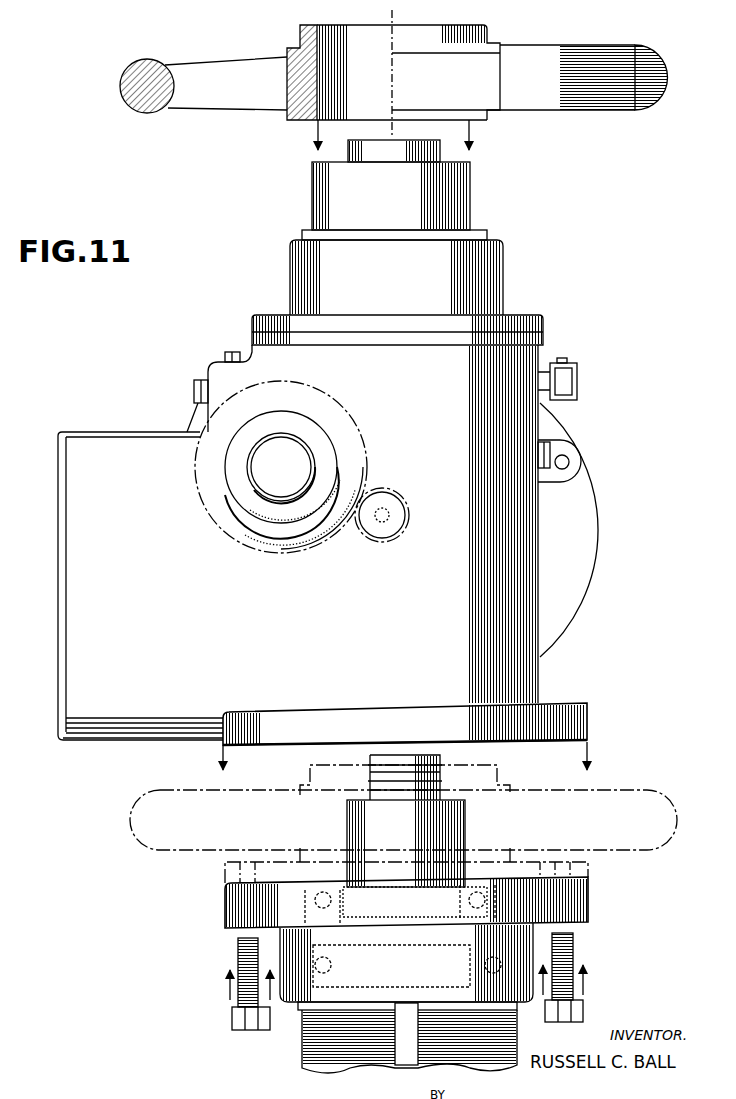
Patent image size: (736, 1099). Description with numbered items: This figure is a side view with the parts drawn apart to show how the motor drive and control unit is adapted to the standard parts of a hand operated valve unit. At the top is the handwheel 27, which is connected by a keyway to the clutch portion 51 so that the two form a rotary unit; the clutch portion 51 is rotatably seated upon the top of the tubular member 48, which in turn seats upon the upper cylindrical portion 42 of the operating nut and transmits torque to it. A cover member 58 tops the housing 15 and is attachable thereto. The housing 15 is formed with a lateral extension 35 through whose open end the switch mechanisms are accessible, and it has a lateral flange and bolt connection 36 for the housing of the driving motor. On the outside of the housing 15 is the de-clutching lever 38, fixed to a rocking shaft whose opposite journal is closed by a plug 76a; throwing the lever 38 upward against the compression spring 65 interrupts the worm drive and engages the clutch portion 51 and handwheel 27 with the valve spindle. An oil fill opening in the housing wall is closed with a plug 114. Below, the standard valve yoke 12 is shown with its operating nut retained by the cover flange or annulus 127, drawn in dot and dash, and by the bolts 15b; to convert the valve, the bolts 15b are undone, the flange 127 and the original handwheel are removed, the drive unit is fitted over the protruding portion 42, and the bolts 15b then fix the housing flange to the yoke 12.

The handwheel 27 is at (543, 56).
The tubular member 48 is at (435, 153).
The clutch portion 51 is at (465, 188).
The cover member 58 is at (490, 260).
The casing or housing 15 is at (527, 600).
The compression spring 65 is at (270, 480).
The lateral extension 35 is at (93, 442).
The plug 76a is at (193, 392).
The plug 114 is at (227, 353).
The de-clutching lever 38 is at (573, 367).
The lateral flange and bolt connection 36 is at (568, 453).
The upper cylindrical portion 42 is at (393, 828).
The retaining top or cover flange or annulus 127 is at (228, 875).
The valve yoke 12 is at (315, 1055).
The screw bolts 15b is at (232, 1016).